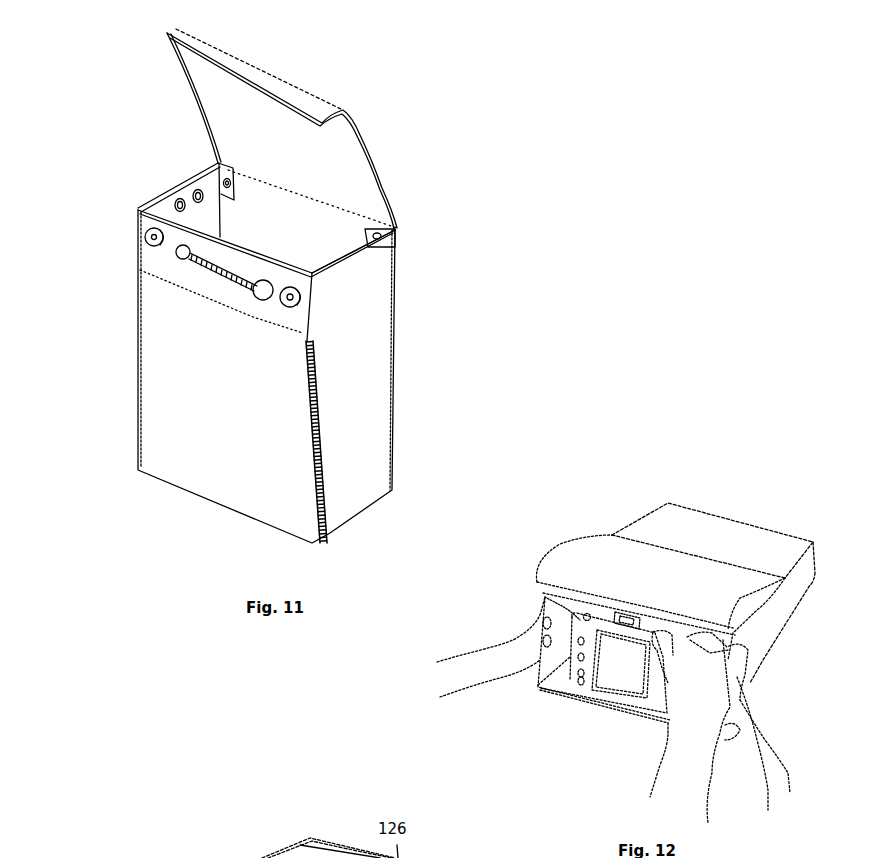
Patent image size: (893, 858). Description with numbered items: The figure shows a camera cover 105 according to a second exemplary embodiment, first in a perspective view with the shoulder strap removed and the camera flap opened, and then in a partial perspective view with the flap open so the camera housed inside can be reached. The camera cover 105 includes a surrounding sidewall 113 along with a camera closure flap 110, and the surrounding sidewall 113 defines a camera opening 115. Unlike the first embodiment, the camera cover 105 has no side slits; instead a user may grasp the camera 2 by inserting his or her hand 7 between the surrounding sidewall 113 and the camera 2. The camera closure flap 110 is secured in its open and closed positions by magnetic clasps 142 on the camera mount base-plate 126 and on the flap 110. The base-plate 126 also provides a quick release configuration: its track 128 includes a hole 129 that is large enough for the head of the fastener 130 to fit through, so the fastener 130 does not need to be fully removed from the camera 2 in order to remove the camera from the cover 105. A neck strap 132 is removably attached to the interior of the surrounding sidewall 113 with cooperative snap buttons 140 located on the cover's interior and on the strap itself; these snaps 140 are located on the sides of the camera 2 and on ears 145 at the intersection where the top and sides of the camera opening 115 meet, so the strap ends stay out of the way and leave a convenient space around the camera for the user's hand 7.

In FIG. 11, the camera cover 105 is at (420, 336).
In FIG. 12, the camera cover 105 is at (649, 500).
In FIG. 11, the camera closure flap 110 is at (292, 92).
In FIG. 12, the camera closure flap 110 is at (622, 575).
In FIG. 11, the surrounding sidewall 113 is at (362, 428).
In FIG. 12, the surrounding sidewall 113 is at (778, 616).
In FIG. 11, the camera opening 115 is at (357, 252).
In FIG. 11, the camera mount base-plate 126 is at (273, 312).
In FIG. 12, the camera mount base-plate 126 is at (595, 706).
In FIG. 11, the track 128 is at (215, 270).
In FIG. 11, the hole 129 is at (265, 287).
In FIG. 11, the fastener 130 is at (178, 252).
In FIG. 12, the neck strap 132 is at (497, 664).
In FIG. 11, the snap buttons 140 is at (180, 204).
In FIG. 11, the magnetic clasps 142 is at (152, 232).
In FIG. 11, the ears 145 is at (229, 181).
In FIG. 12, the camera 2 is at (625, 690).
In FIG. 12, the hand 7 is at (718, 693).